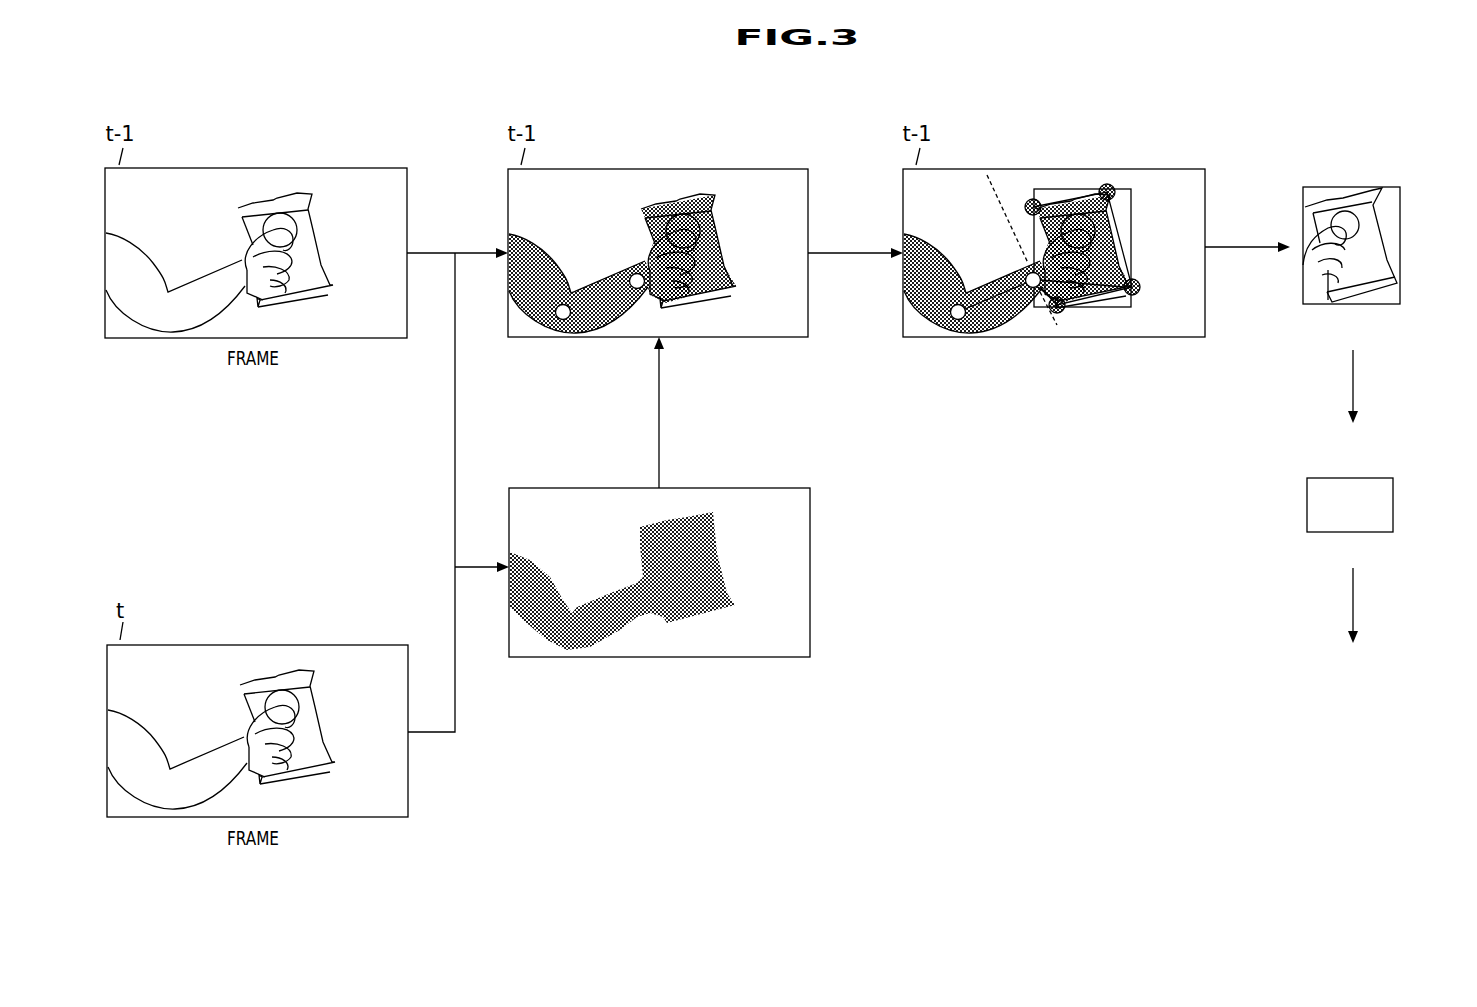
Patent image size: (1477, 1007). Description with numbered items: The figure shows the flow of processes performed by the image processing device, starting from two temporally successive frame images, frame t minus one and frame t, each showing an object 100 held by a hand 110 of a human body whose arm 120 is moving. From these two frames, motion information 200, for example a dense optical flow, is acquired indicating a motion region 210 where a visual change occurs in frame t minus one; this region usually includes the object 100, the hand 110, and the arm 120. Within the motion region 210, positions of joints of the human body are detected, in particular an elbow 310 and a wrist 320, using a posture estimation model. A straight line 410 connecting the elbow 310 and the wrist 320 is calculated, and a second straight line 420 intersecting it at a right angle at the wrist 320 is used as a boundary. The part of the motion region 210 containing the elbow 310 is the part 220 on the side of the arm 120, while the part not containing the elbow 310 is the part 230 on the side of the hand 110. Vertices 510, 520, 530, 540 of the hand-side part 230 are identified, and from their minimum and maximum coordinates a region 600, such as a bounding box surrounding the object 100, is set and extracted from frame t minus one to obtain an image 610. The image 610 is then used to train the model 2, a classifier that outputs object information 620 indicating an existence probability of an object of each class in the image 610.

The model 2 is at (1320, 477).
The object 100 is at (300, 195).
The hand 110 is at (247, 290).
The arm 120 is at (128, 260).
The motion information 200 is at (527, 487).
The motion region 210 is at (750, 198).
The part located in arm's side 220 is at (897, 323).
The part located in hand's side 230 is at (1137, 200).
The elbow 310 is at (558, 320).
The wrist 320 is at (640, 303).
The straight line 410 is at (992, 322).
The straight line 420 is at (1052, 328).
The vertex 510 is at (1034, 199).
The vertex 520 is at (1113, 188).
The vertex 530 is at (1065, 314).
The vertex 540 is at (1140, 298).
The region 600 is at (1133, 237).
The image 610 is at (1395, 188).
The object information 620 is at (1298, 656).